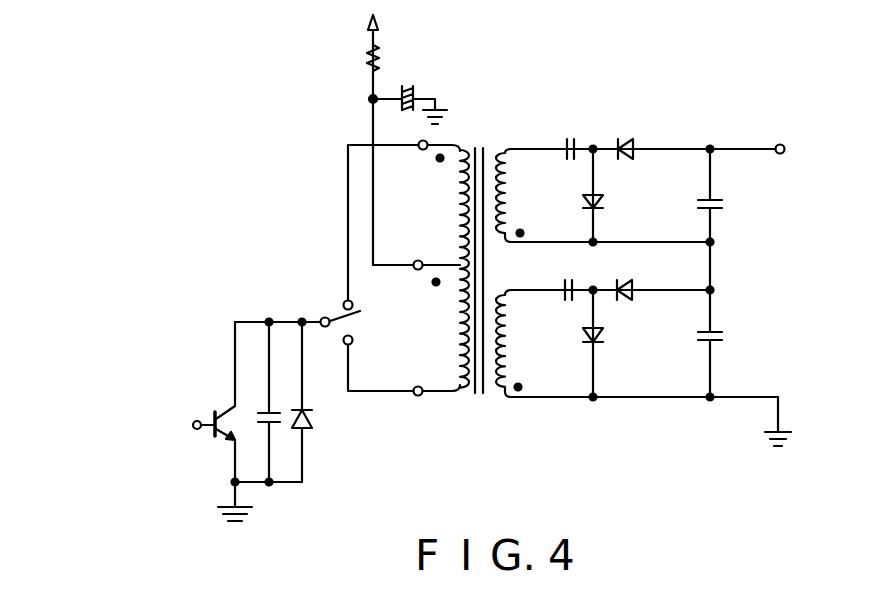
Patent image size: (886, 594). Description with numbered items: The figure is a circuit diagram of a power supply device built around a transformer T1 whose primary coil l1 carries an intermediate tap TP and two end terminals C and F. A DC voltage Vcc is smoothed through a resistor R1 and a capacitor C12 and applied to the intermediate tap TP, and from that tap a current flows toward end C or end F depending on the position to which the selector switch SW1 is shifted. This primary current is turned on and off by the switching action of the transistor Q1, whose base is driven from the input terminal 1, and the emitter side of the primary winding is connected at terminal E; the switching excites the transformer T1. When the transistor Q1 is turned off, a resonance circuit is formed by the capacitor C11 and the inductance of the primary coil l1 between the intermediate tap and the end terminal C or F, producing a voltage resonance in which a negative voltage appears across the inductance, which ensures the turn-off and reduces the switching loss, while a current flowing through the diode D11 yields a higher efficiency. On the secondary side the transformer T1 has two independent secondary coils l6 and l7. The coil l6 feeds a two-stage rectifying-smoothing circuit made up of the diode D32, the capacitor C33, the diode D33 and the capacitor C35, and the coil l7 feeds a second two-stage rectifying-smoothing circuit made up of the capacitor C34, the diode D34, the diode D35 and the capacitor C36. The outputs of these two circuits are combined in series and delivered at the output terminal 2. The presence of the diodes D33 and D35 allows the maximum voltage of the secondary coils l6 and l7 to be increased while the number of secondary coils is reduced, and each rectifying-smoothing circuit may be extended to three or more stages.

The DC voltage Vcc is at (391, 132).
The resistor R1 is at (365, 56).
The capacitor C12 is at (410, 89).
The transformer T1 is at (591, 246).
The primary coil l1 is at (455, 206).
The secondary coil l6 is at (512, 206).
The secondary coil l7 is at (506, 336).
The end terminal C is at (419, 150).
The end terminal E is at (416, 260).
The intermediate tap TP is at (434, 287).
The end terminal F is at (421, 396).
The selector switch SW1 is at (322, 318).
The transistor Q1 is at (223, 409).
The input terminal 1 is at (192, 425).
The capacitor C11 is at (264, 426).
The diode D11 is at (312, 426).
The capacitor C33 is at (569, 138).
The diode D32 is at (660, 118).
The output terminal 2 is at (780, 143).
The diode D33 is at (606, 200).
The capacitor C35 is at (726, 204).
The capacitor C34 is at (565, 278).
The diode D34 is at (630, 284).
The diode D35 is at (606, 337).
The capacitor C36 is at (724, 335).